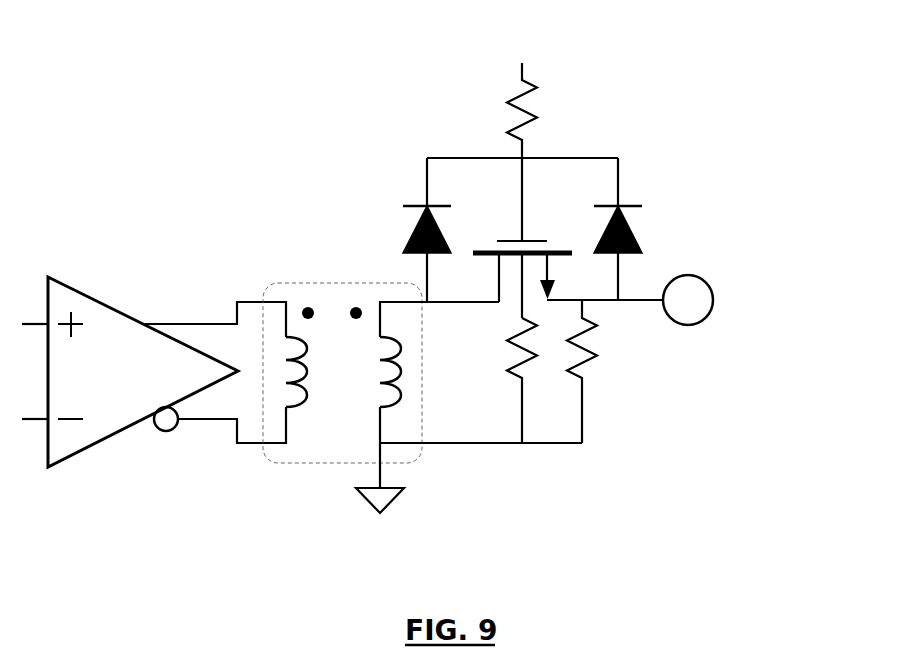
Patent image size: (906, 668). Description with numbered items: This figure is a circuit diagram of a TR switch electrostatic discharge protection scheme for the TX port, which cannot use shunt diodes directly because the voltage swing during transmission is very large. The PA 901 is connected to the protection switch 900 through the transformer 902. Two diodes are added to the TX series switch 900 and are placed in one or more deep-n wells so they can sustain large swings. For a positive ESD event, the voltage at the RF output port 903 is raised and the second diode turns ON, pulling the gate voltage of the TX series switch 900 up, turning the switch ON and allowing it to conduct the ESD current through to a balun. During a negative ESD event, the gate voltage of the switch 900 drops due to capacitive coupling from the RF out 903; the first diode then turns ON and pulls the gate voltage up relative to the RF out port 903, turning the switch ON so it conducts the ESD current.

The protection switch 900 is at (647, 119).
The PA 901 is at (107, 447).
The transformer 902 is at (263, 447).
The RF output port 903 is at (704, 282).